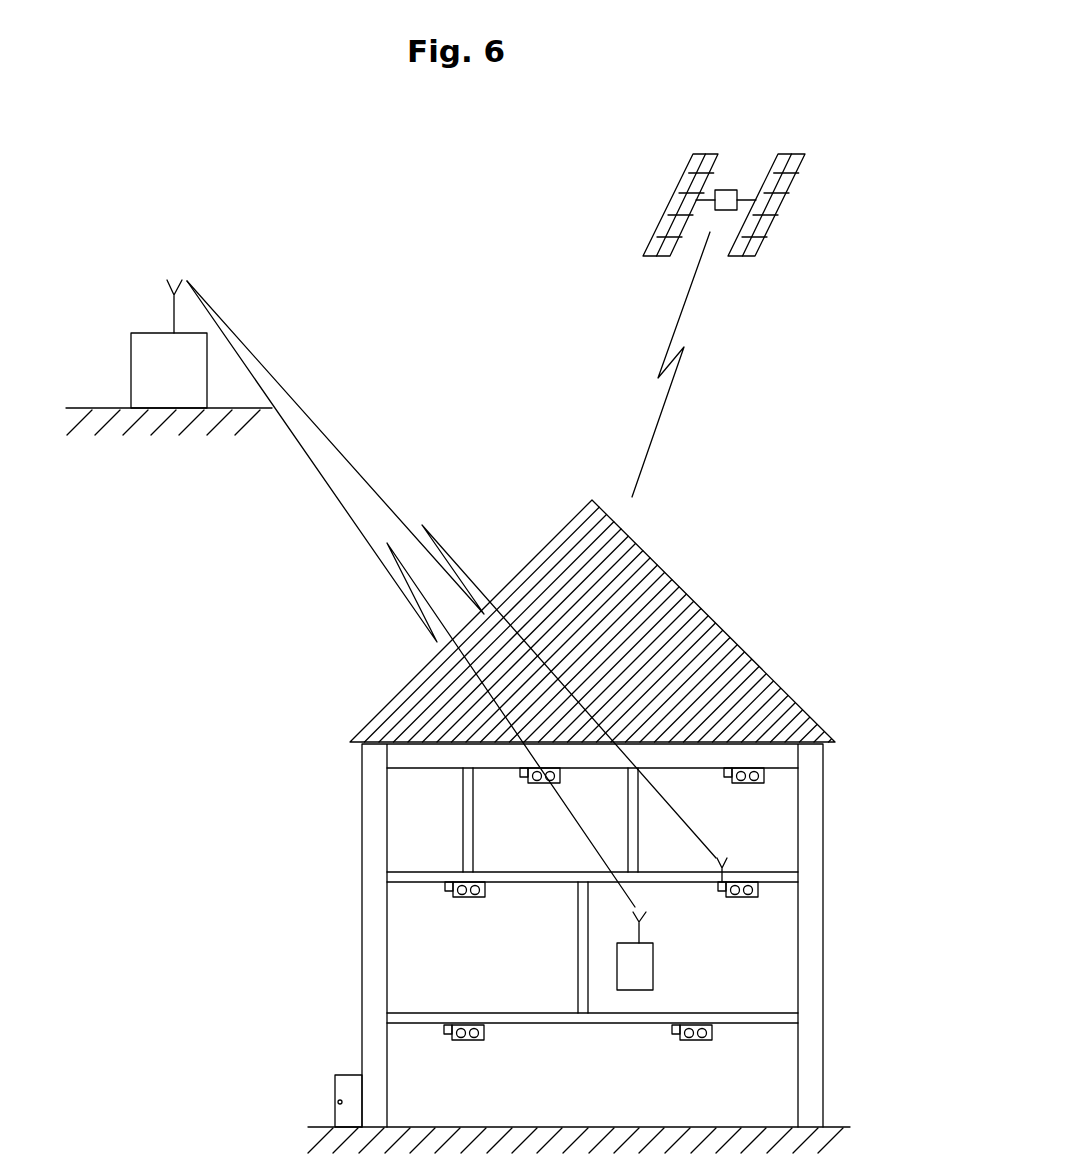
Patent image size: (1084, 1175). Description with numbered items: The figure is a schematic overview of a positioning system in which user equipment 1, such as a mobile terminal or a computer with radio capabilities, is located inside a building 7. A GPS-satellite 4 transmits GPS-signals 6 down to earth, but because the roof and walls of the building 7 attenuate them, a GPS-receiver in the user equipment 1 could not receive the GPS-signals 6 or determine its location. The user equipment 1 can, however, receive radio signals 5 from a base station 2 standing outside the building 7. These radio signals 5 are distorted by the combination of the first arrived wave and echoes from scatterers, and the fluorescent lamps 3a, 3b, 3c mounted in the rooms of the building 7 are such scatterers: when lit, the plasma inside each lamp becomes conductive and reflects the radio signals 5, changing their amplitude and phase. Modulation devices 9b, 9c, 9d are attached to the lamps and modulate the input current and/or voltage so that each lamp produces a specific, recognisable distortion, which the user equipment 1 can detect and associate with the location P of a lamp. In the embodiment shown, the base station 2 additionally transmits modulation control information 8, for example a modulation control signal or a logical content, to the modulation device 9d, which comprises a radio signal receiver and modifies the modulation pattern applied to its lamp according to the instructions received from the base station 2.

The user equipment 1 is at (653, 955).
The base station 2 is at (130, 358).
The fluorescent lamp 3a is at (814, 894).
The fluorescent lamp 3b is at (819, 790).
The fluorescent lamp 3c is at (451, 868).
The GPS-satellite 4 is at (781, 202).
The radio signals 5 is at (325, 485).
The GPS-signals 6 is at (662, 412).
The building 7 is at (362, 822).
The modulation control information 8 is at (298, 407).
The modulation device 9b is at (728, 781).
The modulation device 9c is at (448, 895).
The modulation device 9d is at (722, 894).